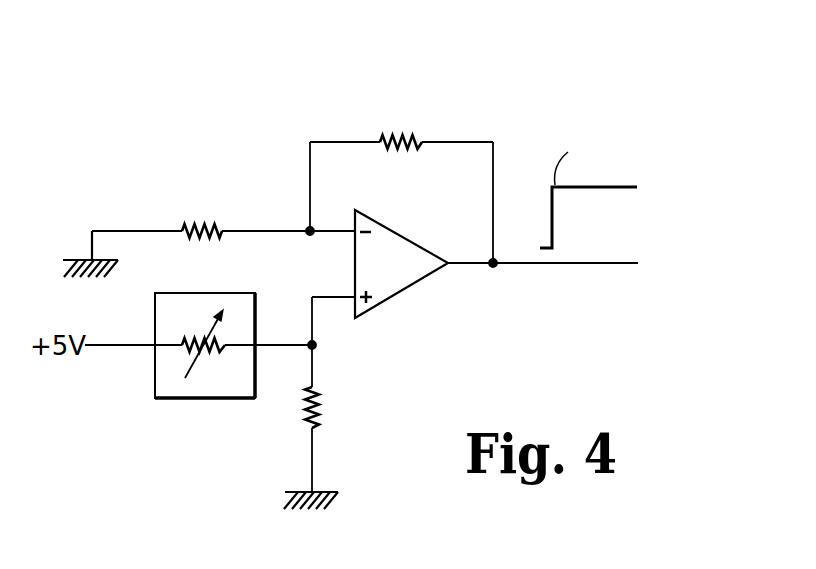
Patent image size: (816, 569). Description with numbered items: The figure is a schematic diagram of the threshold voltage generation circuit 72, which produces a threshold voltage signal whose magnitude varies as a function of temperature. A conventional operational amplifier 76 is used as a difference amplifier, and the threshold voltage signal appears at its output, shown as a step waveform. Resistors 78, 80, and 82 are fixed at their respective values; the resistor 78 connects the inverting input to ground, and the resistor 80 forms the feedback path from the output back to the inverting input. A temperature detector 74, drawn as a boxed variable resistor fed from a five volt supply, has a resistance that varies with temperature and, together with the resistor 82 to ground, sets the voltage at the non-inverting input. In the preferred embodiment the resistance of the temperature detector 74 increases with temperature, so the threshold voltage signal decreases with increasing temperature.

The threshold voltage generation circuit 72 is at (507, 108).
The temperature detector 74 is at (180, 402).
The operational amplifier 76 is at (403, 301).
The resistor 78 is at (217, 230).
The resistor 80 is at (415, 138).
The resistor 82 is at (305, 425).